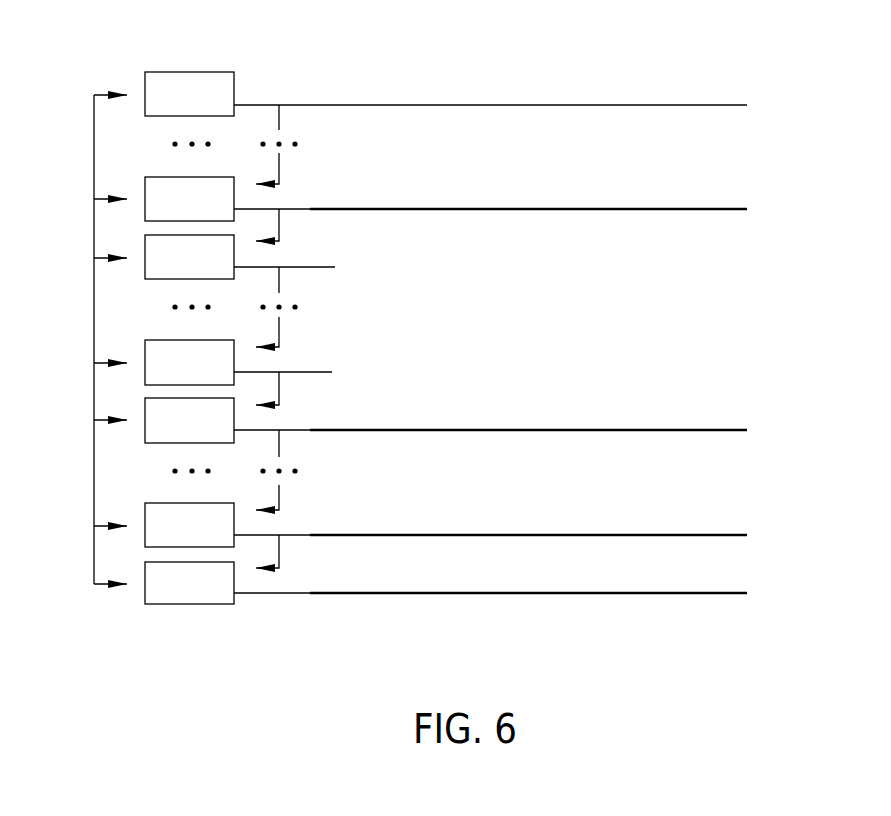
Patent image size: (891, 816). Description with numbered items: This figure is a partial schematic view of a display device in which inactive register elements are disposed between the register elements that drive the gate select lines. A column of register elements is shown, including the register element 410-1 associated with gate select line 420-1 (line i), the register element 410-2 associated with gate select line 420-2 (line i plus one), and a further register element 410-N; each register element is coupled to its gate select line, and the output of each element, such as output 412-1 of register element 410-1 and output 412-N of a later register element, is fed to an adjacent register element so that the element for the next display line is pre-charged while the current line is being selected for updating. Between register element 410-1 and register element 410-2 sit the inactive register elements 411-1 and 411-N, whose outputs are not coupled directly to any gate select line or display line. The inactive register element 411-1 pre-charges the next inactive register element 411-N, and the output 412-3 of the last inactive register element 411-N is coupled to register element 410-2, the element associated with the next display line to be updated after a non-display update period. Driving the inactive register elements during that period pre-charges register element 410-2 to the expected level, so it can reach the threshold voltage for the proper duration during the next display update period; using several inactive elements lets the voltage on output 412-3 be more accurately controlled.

The register element 410-1 is at (223, 212).
The register element 410-2 is at (223, 434).
The register element 410-N is at (224, 596).
The inactive register element 411-1 is at (223, 270).
The inactive register element 411-N is at (224, 376).
The output 412-1 is at (288, 209).
The output 412-3 is at (279, 387).
The output 412-N is at (273, 593).
The gate select line 420-1 is at (493, 209).
The gate select line 420-2 is at (552, 430).